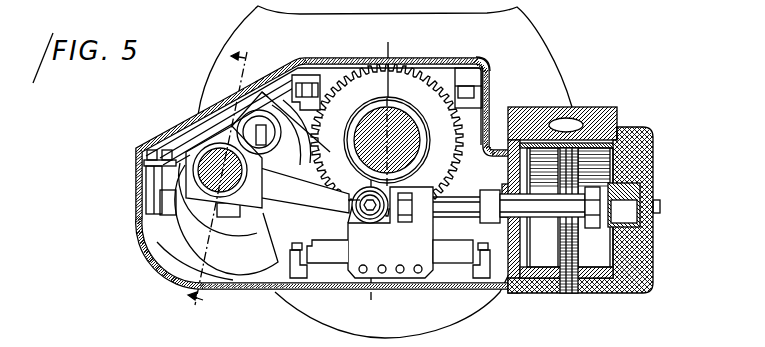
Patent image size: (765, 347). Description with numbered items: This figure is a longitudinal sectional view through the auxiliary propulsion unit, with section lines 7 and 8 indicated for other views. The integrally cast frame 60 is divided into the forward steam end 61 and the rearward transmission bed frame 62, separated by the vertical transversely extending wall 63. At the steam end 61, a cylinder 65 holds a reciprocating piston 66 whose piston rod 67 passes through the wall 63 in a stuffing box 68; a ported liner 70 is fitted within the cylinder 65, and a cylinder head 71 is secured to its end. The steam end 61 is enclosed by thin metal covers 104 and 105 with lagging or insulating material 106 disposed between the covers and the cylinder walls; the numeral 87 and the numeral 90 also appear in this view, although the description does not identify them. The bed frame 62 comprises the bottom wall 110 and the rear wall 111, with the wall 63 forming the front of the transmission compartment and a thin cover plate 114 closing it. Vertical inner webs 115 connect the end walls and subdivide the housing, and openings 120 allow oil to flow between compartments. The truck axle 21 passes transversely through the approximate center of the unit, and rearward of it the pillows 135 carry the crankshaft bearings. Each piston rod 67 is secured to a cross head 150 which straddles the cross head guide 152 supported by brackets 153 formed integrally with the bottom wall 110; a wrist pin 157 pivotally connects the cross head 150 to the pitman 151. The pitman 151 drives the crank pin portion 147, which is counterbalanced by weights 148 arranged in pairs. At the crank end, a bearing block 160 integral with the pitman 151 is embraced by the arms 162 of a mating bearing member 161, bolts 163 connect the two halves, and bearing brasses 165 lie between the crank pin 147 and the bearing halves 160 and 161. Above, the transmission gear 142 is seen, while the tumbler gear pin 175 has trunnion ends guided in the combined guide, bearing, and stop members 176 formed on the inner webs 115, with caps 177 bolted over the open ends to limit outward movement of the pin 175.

The section line 7- 7 is at (381, 173).
The section line 8- 8 is at (219, 183).
The axle 21 is at (400, 126).
The frame 60 is at (173, 283).
The steam end 61 is at (541, 290).
The transmission bed frame 62 is at (275, 280).
The wall 63 is at (511, 108).
The cylinders 65 is at (594, 262).
The pistons 66 is at (570, 272).
The piston rods 67 is at (546, 214).
The stuffing boxes 68 is at (506, 192).
The liners 70 is at (622, 130).
The cylinder heads 71 is at (650, 187).
The opening 87 is at (562, 118).
The seal 90 is at (616, 112).
The cover 104 is at (594, 107).
The cover 105 is at (646, 233).
The lagging or insulating material 106 is at (647, 258).
The bottom wall 110 is at (436, 280).
The rear wall 111 is at (150, 200).
The cover plate 114 is at (302, 66).
The inner webs 115 is at (308, 135).
The openings 120 is at (490, 66).
The pillows 135 is at (160, 208).
The gear 142 is at (436, 100).
The crank pin portions 147 is at (205, 157).
The weights 148 is at (157, 242).
The cross head 150 is at (426, 230).
The pitman 151 is at (324, 196).
The cross head guide 152 is at (337, 258).
The brackets 153 is at (297, 278).
The wrist pin 157 is at (373, 213).
The bearing block 160 is at (246, 218).
The mating bearing member 161 is at (140, 167).
The arms 162 is at (218, 118).
The bolts 163 is at (299, 189).
The bearing brasses 165 is at (196, 160).
The pin or axle 175 is at (262, 108).
The combined guide, bearing, and stop members 176 is at (298, 160).
The caps 177 is at (259, 124).